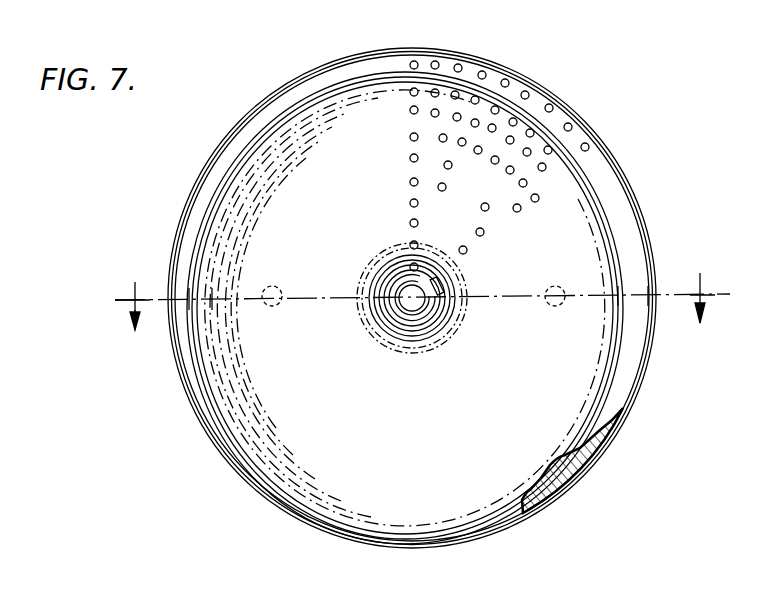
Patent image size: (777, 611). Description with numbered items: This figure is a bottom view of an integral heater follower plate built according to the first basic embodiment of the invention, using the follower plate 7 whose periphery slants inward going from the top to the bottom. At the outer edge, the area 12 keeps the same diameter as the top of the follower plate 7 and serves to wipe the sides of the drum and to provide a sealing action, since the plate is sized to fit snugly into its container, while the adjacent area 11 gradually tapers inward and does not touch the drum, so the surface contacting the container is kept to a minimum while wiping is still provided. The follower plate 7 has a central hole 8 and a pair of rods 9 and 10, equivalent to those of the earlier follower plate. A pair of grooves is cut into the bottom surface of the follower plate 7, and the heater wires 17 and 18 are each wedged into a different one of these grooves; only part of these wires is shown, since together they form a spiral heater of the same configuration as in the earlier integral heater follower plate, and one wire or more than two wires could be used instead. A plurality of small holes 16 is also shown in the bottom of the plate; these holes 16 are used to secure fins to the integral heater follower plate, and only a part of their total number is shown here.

The follower plate 7 is at (326, 57).
The hole 8 is at (410, 300).
The rod 9 is at (558, 284).
The rod 10 is at (278, 284).
The tapered area 11 is at (625, 410).
The wiping area 12 is at (648, 371).
The small holes 16 is at (482, 71).
The heater wire 17 is at (203, 218).
The heater wire 18 is at (253, 203).